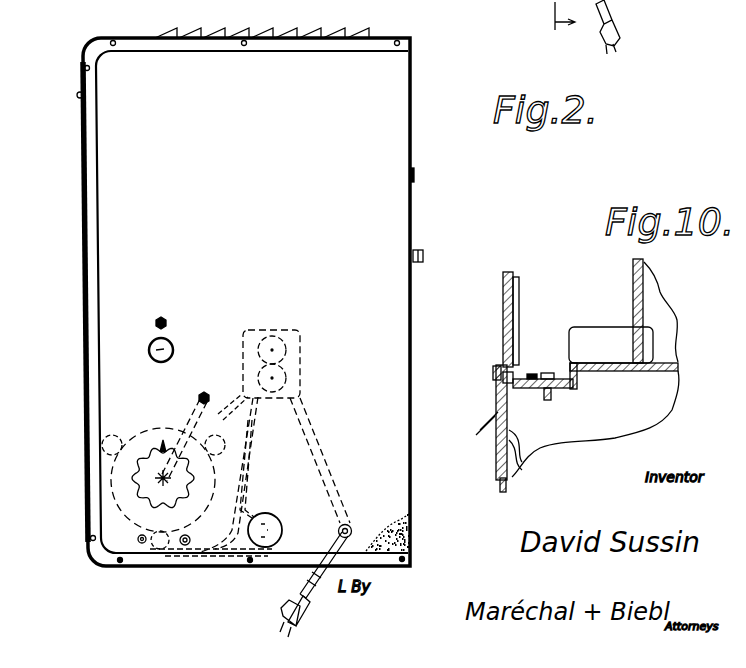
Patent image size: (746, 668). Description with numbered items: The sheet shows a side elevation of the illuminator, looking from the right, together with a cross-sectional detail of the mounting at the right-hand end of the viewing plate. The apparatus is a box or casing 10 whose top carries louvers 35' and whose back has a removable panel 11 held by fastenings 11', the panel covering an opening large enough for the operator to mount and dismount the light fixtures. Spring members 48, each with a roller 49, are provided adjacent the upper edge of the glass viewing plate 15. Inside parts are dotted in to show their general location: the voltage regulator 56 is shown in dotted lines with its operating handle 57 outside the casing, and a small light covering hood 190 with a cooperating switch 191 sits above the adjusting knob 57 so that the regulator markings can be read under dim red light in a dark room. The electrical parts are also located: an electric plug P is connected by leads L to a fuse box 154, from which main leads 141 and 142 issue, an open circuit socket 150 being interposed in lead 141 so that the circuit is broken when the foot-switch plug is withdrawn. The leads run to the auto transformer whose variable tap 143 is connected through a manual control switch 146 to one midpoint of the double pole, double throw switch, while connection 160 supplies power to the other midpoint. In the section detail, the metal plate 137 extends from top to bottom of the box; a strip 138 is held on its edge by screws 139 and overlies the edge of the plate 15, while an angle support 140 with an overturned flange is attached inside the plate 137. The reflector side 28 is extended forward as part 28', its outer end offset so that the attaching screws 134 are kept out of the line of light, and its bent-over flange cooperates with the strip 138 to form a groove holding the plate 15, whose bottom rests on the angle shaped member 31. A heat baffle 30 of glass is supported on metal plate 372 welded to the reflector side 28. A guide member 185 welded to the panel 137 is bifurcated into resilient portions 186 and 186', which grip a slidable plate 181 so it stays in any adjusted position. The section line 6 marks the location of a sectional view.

In FIG. 2, the box or casing 10 is at (412, 74).
In FIG. 2, the louvers 35' is at (281, 21).
In FIG. 2, the removable panel 11 is at (441, 184).
In FIG. 2, the fastenings 11' is at (442, 244).
In FIG. 2, the spring members 48 is at (85, 68).
In FIG. 2, the roller 49 is at (77, 95).
In FIG. 2, the switch 191 is at (155, 322).
In FIG. 2, the light covering hood 190 is at (149, 350).
In FIG. 2, the manual control switch 146 is at (205, 393).
In FIG. 2, the variable tap 143 is at (186, 418).
In FIG. 2, the connection 160 is at (243, 406).
In FIG. 2, the fuse box 154 is at (300, 355).
In FIG. 2, the leads L is at (325, 448).
In FIG. 2, the electric plug P is at (305, 616).
In FIG. 2, the main lead 142 is at (245, 432).
In FIG. 2, the main lead 141 is at (248, 456).
In FIG. 2, the open circuit socket 150 is at (270, 514).
In FIG. 2, the voltage regulator 56 is at (143, 438).
In FIG. 2, the operating handle 57 is at (150, 478).
In FIG. 2, the section line 6 is at (587, 27).
In FIG. 2, the metal plate 137 is at (491, 9).
In FIG. 10, the metal plate 137 is at (497, 447).
In FIG. 10, the glass viewing plate 15 is at (503, 300).
In FIG. 10, the angle shaped member 31 is at (513, 336).
In FIG. 10, the strip 138 is at (494, 384).
In FIG. 10, the reflector side 28 is at (595, 369).
In FIG. 10, the metal plate 372 is at (596, 340).
In FIG. 10, the heat baffle 30 is at (645, 270).
In FIG. 10, the angle support 140 is at (546, 402).
In FIG. 10, the attaching screws 134 is at (540, 428).
In FIG. 10, the extended reflector side 28' is at (582, 418).
In FIG. 10, the screws 139 is at (471, 423).
In FIG. 10, the guide member 185 is at (496, 422).
In FIG. 10, the spaced portion 186 is at (468, 479).
In FIG. 10, the spaced portion 186' is at (539, 458).
In FIG. 10, the slidable plate 181 is at (503, 492).